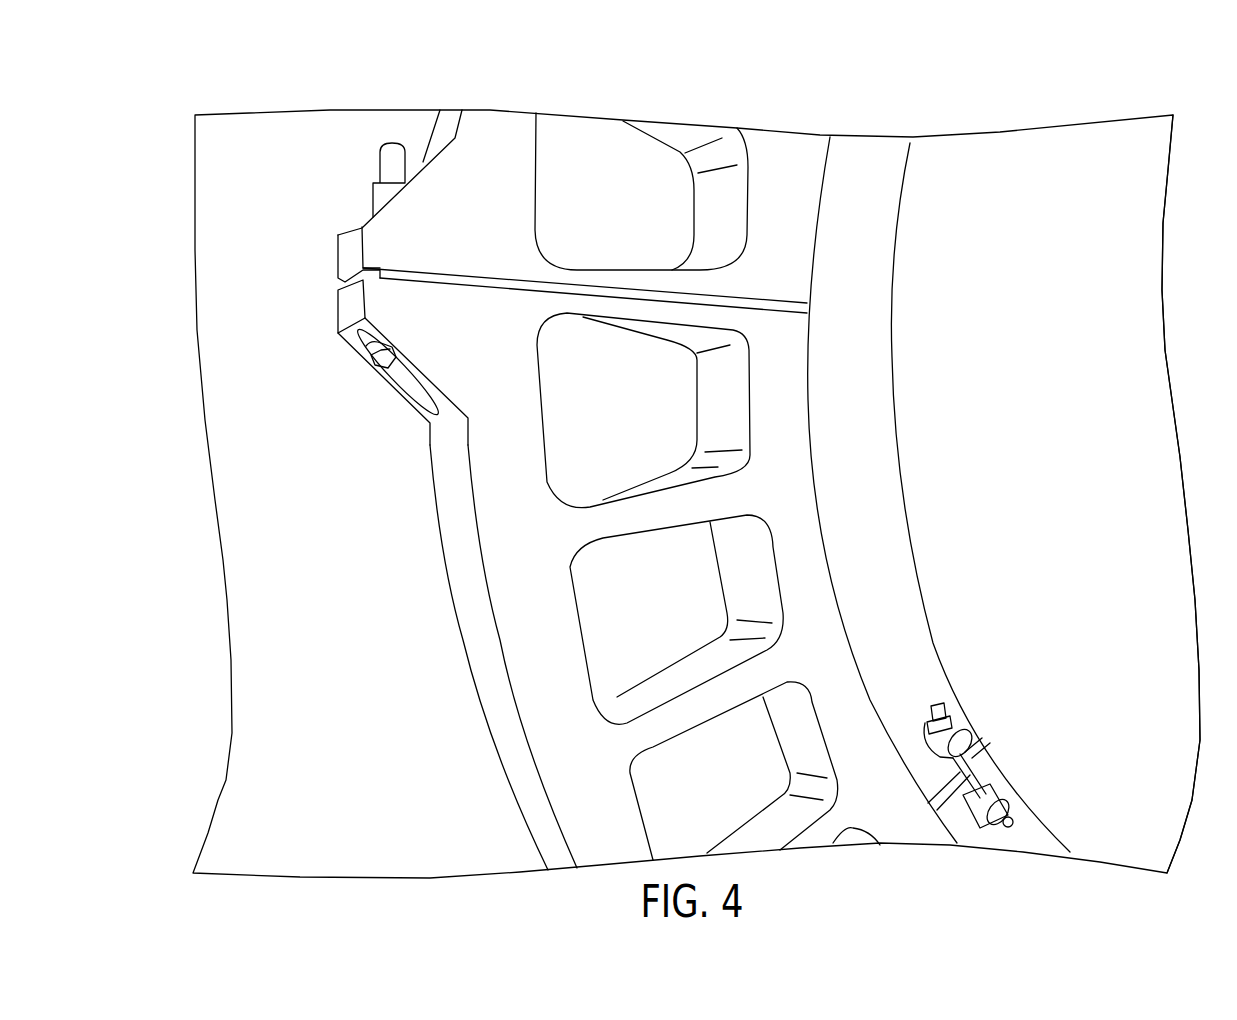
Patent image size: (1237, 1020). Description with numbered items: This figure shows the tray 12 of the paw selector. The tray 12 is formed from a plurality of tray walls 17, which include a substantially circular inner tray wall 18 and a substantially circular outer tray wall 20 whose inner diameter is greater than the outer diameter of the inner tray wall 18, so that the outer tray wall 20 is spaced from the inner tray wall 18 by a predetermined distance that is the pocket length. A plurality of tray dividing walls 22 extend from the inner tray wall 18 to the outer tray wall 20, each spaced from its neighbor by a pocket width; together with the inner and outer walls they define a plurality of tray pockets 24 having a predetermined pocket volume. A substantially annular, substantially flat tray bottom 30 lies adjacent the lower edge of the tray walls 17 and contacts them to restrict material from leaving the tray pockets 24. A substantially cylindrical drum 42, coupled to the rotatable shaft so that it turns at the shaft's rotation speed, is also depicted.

The tray 12 is at (678, 90).
The tray walls 17 is at (538, 728).
The inner tray wall 18 is at (795, 153).
The outer tray wall 20 is at (497, 127).
The tray dividing walls 22 is at (698, 713).
The tray pockets 24 is at (653, 602).
The tray bottom 30 is at (617, 392).
The drum 42 is at (1172, 473).